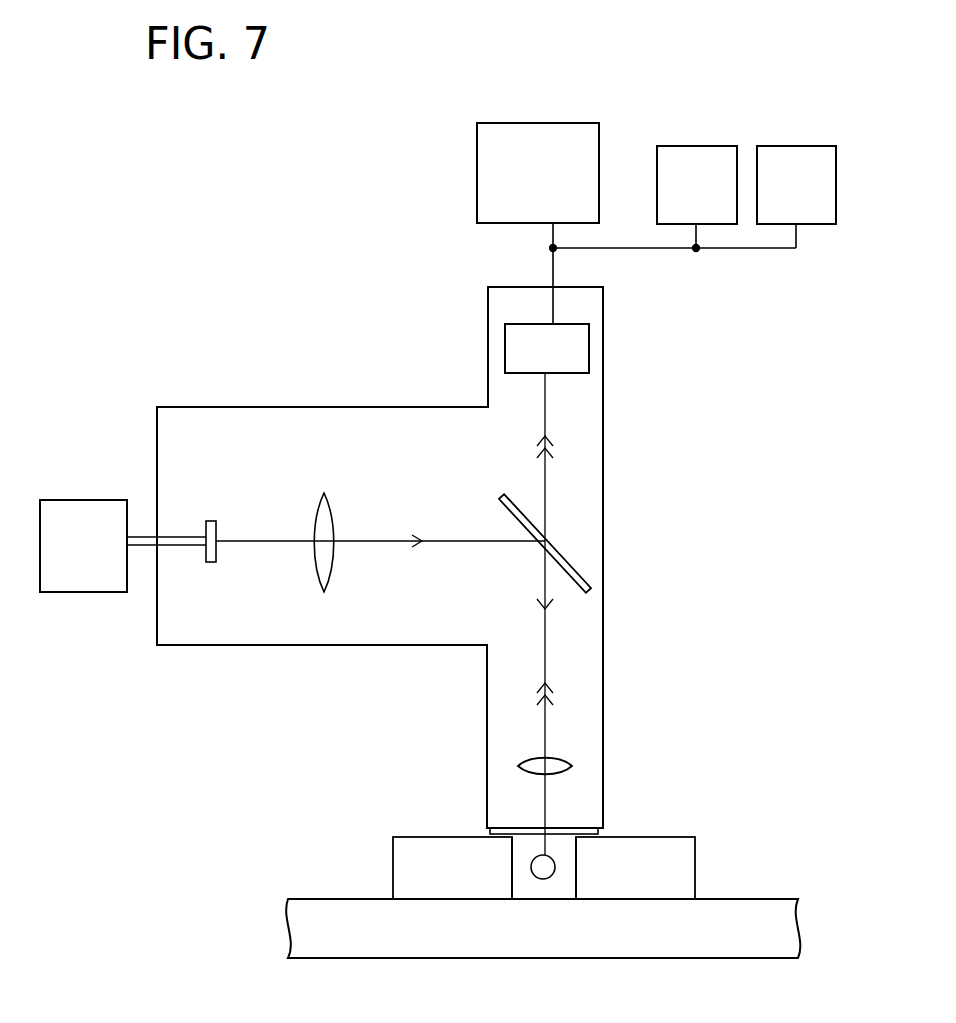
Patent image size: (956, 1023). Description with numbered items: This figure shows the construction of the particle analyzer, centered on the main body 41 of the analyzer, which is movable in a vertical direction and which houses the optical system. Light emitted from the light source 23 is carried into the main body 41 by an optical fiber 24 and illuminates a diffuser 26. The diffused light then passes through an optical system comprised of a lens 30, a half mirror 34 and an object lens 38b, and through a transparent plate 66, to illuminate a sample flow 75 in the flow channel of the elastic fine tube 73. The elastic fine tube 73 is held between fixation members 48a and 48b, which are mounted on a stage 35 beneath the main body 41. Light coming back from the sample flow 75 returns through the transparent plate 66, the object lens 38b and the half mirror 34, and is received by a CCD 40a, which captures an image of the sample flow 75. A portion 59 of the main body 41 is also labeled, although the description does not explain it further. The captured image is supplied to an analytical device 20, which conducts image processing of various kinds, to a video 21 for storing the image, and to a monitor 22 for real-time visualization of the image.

The analytical device 20 is at (540, 122).
The video 21 is at (684, 145).
The monitor 22 is at (783, 145).
The light source 23 is at (75, 507).
The optical fiber 24 is at (188, 545).
The diffuser 26 is at (212, 520).
The lens 30 is at (327, 518).
The half mirror 34 is at (582, 573).
The stage 35 is at (523, 953).
The object lens 38b is at (553, 762).
The CCD 40a is at (590, 343).
The main body 41 is at (274, 392).
The fixation member 48a is at (647, 892).
The fixation member 48b is at (443, 892).
The housing side wall 59 is at (487, 702).
The transparent plate 66 is at (602, 831).
The elastic fine tube 73 is at (518, 858).
The sample flow 75 is at (557, 868).